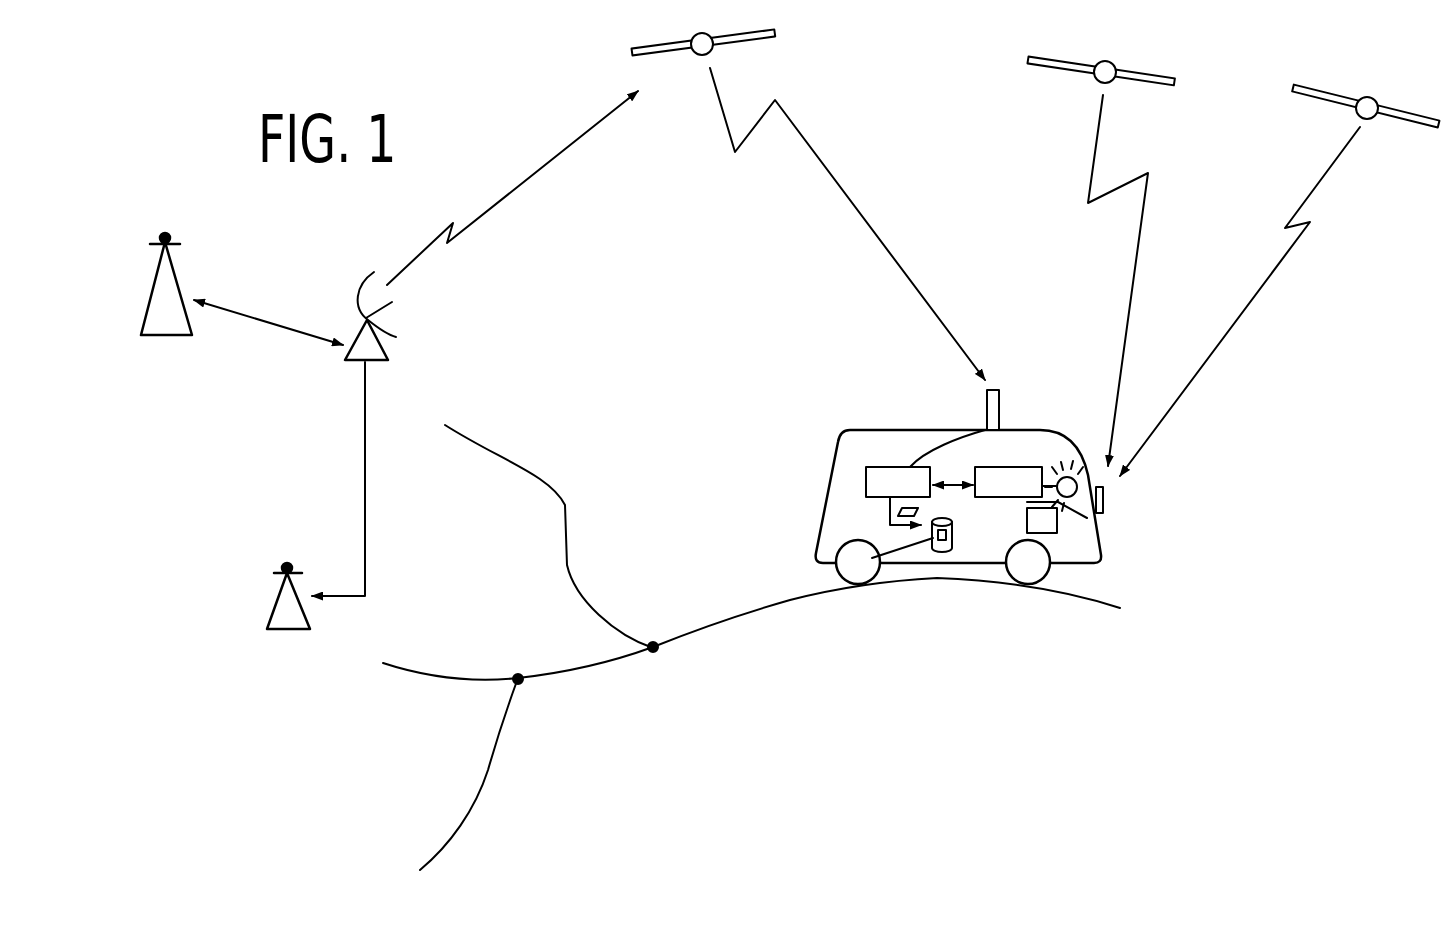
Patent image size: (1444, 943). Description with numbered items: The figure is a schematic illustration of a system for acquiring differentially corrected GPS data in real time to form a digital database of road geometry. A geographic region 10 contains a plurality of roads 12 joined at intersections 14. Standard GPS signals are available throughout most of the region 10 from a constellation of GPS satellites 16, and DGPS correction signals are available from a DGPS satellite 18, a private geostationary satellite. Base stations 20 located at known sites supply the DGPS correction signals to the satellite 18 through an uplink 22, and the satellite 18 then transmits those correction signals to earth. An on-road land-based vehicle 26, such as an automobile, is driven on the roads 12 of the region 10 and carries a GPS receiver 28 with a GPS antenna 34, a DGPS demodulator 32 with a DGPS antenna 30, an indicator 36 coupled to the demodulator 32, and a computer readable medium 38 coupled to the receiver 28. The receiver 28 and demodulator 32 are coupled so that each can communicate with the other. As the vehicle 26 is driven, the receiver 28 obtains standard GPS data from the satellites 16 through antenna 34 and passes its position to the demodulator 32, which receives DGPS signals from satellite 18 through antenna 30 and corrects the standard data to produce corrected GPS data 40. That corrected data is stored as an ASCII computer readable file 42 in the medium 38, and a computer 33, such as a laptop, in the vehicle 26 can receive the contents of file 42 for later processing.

The geographic region 10 is at (747, 686).
The roads 12 is at (570, 562).
The intersections 14 is at (526, 666).
The GPS satellites 16 is at (1109, 52).
The DGPS satellite 18 is at (758, 47).
The base stations 20 is at (144, 270).
The uplink 22 is at (390, 347).
The on-road land-based vehicle 26 is at (852, 424).
The GPS receiver 28 is at (882, 493).
The DGPS antenna 30 is at (1107, 500).
The DGPS demodulator 32 is at (992, 493).
The computer 33 is at (1031, 530).
The GPS antenna 34 is at (1000, 393).
The indicator 36 is at (1073, 466).
The computer readable medium 38 is at (955, 530).
The corrected GPS data 40 is at (918, 511).
The computer readable file 42 is at (884, 561).